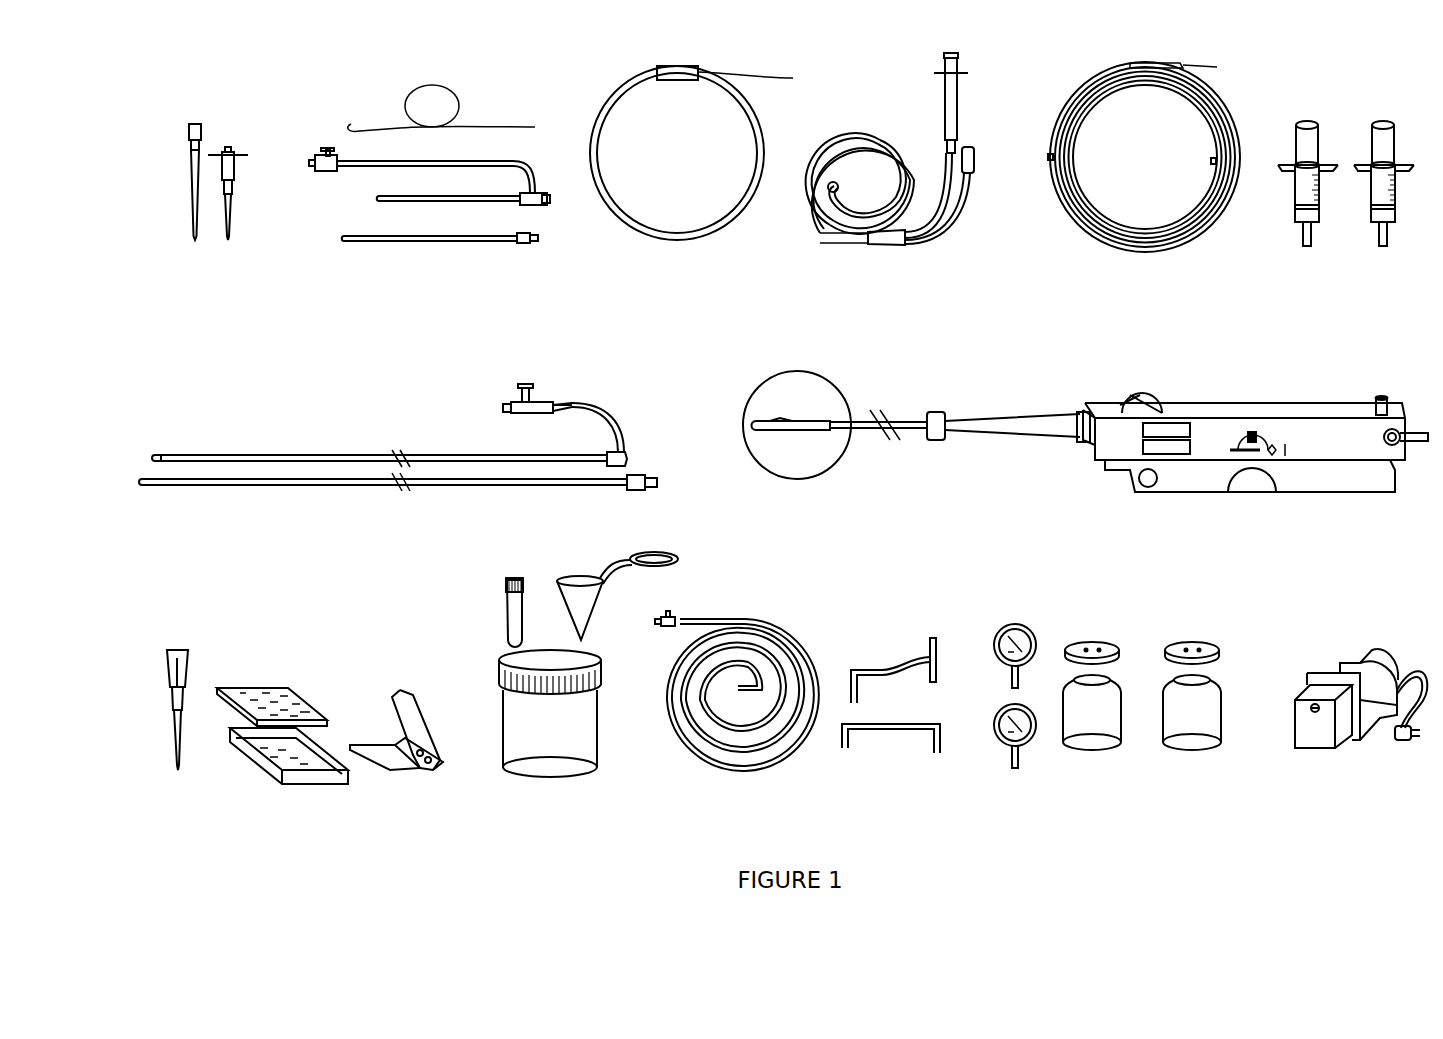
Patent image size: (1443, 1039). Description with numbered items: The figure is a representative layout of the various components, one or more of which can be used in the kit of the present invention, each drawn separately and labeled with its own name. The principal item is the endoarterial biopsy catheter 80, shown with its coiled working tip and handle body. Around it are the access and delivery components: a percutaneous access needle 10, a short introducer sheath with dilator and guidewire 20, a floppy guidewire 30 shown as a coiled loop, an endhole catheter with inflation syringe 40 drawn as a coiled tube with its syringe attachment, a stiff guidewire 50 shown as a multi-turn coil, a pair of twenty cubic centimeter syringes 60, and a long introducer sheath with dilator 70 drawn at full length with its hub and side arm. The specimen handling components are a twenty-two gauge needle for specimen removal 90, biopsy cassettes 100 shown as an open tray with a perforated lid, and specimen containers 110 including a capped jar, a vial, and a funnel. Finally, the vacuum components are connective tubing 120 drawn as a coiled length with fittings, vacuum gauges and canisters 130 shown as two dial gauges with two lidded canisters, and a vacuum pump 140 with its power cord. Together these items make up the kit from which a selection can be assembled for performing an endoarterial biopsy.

The percutaneous access needle 10 is at (212, 233).
The short introducer sheath with dilator and guidewire 20 is at (430, 214).
The floppy guidewire 30 is at (691, 190).
The endhole catheter with inflation syringe 40 is at (885, 184).
The stiff guidewire 50 is at (1144, 188).
The 20 cc syringes 60 is at (1346, 218).
The long introducer sheath with dilator 70 is at (398, 464).
The endoarterial biopsy catheter 80 is at (1085, 458).
The 22 gauge needle for specimen removal 90 is at (182, 740).
The biopsy cassettes 100 is at (330, 759).
The specimen containers 110 is at (571, 691).
The connective tubing 120 is at (797, 721).
The vacuum gauges and canisters 130 is at (1097, 728).
The vacuum pump 140 is at (1353, 741).